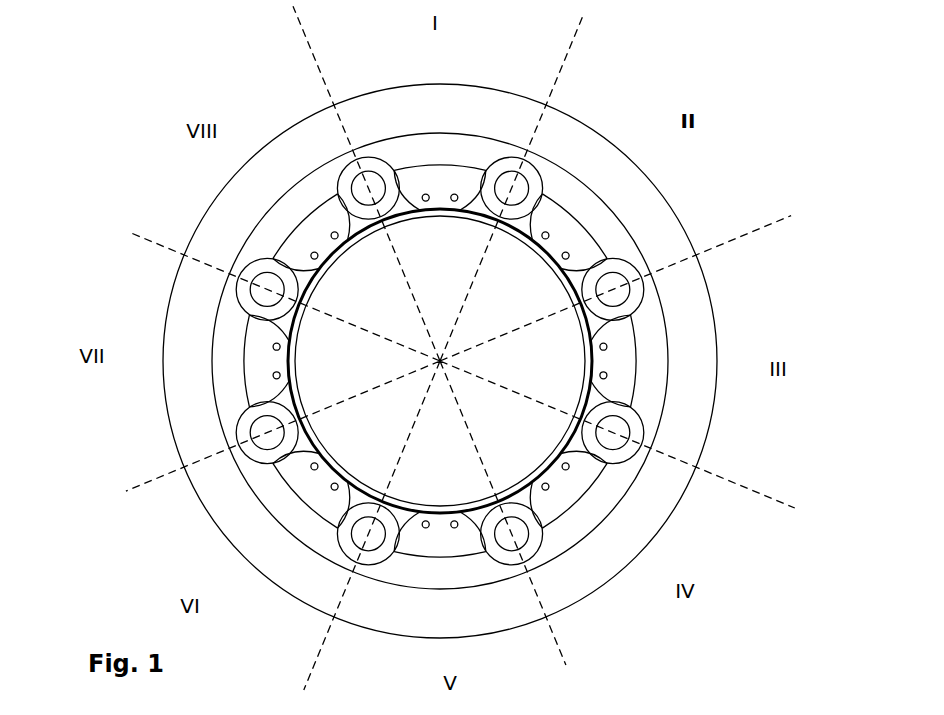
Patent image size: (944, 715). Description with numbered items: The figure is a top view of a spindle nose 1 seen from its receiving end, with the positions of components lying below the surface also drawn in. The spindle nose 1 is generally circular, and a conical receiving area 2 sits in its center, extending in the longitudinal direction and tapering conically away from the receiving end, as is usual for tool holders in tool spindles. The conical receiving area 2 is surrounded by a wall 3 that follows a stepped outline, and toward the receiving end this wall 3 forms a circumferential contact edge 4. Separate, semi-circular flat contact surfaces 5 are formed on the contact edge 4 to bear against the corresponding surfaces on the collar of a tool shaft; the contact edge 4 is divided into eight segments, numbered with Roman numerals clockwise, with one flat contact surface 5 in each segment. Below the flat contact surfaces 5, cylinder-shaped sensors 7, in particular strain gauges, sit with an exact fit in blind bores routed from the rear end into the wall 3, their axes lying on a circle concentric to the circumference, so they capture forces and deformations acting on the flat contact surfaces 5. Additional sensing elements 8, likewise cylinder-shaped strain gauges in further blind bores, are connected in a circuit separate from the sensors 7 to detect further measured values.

The spindle nose 1 is at (713, 194).
The conical receiving area 2 is at (560, 339).
The wall 3 is at (210, 205).
The contact edge 4 is at (249, 313).
The flat contact surfaces 5 is at (472, 183).
The sensors 7 is at (426, 194).
The sensing elements 8 is at (455, 194).